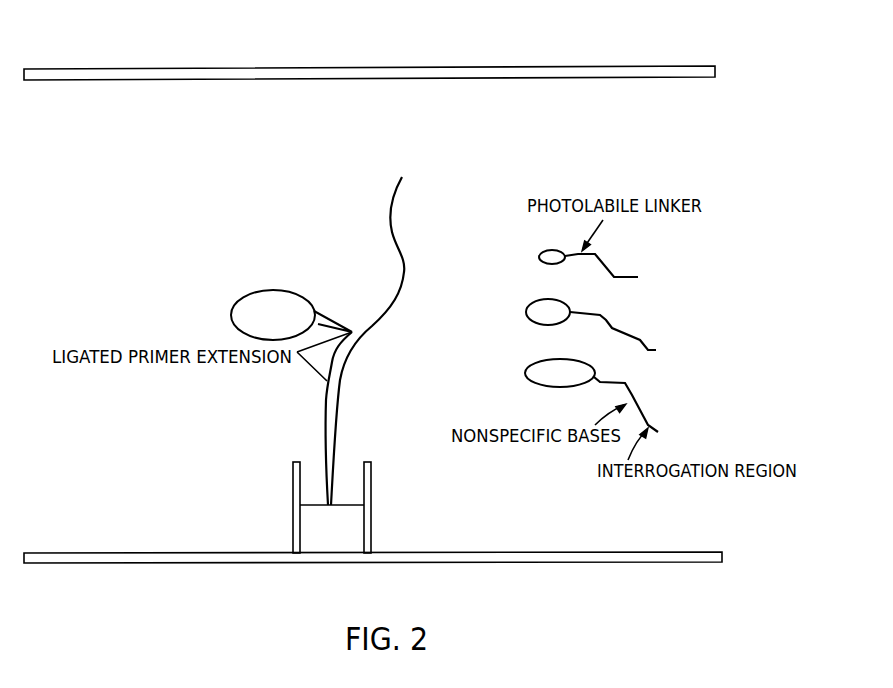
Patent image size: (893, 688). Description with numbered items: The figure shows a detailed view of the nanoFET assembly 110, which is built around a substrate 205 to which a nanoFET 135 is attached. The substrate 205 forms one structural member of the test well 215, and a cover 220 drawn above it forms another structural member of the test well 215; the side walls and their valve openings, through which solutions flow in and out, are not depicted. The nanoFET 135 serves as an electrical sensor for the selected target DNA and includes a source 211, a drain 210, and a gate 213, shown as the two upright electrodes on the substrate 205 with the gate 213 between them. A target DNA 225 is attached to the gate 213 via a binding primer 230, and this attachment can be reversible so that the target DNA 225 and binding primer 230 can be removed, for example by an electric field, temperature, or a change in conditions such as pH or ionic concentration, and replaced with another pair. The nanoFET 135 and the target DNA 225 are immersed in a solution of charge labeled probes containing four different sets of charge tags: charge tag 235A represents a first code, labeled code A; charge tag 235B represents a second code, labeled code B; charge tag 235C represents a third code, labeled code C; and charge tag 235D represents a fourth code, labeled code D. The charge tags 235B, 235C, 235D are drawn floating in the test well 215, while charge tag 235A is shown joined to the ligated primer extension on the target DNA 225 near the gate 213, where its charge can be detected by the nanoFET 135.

The nanoFET assembly 110 is at (129, 53).
The cover 220 is at (686, 66).
The test well 215 is at (645, 139).
The substrate 205 is at (692, 552).
The target DNA 225 is at (405, 184).
The binding primer 230 is at (326, 492).
The charge tag 235A is at (288, 262).
The charge tag 235B is at (500, 250).
The charge tag 235C is at (485, 300).
The charge tag 235D is at (480, 363).
The nanoFET 135 is at (348, 531).
The source 211 is at (212, 528).
The drain 210 is at (430, 541).
The gate 213 is at (332, 535).